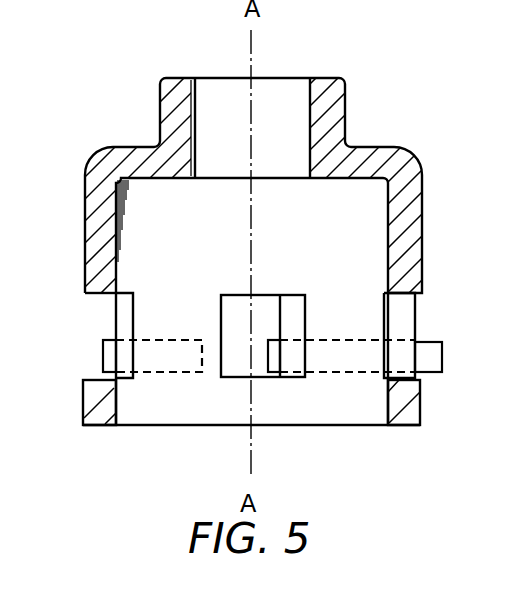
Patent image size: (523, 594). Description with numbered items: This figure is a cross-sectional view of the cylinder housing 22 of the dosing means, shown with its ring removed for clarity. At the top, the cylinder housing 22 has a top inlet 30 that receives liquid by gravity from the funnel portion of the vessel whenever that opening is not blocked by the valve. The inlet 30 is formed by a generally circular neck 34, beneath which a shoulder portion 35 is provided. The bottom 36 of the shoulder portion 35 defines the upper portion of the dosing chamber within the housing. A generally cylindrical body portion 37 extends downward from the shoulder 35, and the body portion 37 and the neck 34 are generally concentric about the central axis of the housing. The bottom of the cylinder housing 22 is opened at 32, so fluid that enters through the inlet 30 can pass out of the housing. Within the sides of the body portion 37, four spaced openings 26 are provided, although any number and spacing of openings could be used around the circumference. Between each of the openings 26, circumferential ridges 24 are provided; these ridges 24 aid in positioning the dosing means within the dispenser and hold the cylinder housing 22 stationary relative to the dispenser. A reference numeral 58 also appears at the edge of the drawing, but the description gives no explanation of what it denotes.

The cylinder housing 22 is at (418, 124).
The circumferential ridges 24 is at (431, 342).
The openings 26 is at (263, 310).
The top inlet 30 is at (270, 100).
The open bottom 32 is at (327, 405).
The neck 34 is at (326, 127).
The shoulder portion 35 is at (129, 147).
The bottom of the shoulder portion 36 is at (349, 180).
The body portion 37 is at (457, 243).
The adjacent member 58 is at (508, 263).